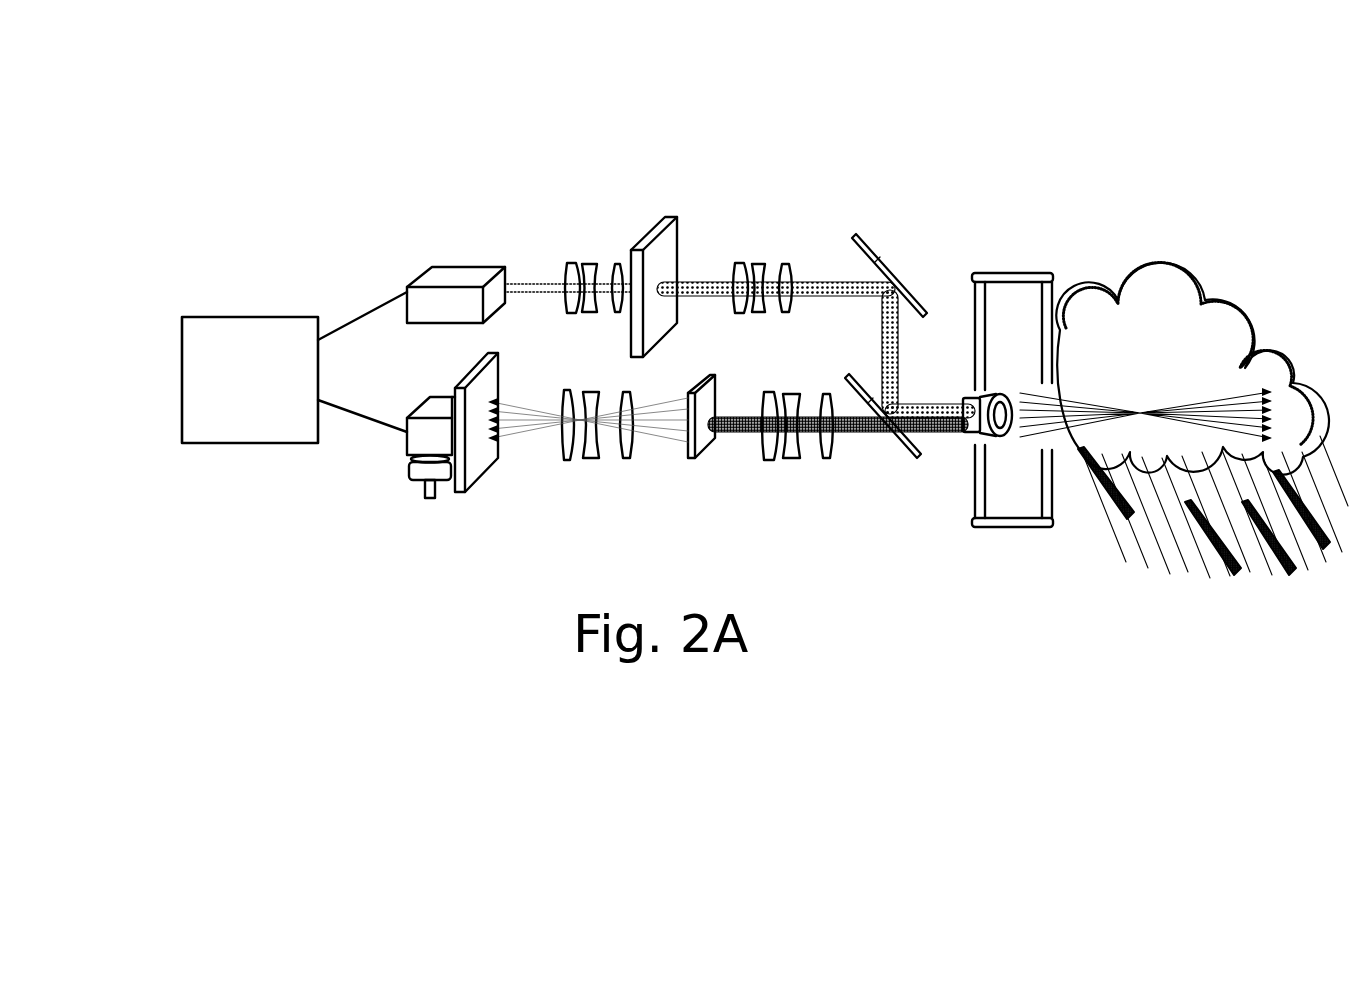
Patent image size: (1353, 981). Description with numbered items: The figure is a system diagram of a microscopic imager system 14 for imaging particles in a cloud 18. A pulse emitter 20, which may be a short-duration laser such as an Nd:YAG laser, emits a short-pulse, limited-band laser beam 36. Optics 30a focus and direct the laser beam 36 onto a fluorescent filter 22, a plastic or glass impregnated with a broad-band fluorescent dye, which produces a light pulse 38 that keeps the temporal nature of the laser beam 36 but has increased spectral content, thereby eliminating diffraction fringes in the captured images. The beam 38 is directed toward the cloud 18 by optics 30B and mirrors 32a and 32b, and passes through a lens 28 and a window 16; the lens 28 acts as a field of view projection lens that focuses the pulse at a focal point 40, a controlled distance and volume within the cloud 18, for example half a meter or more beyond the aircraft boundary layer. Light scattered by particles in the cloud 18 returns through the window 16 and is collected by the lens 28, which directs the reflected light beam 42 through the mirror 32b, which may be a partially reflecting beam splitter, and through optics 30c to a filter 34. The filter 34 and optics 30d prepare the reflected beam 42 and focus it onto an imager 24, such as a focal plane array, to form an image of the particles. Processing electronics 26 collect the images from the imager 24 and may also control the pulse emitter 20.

The microscopic imager system 14 is at (765, 348).
The window 16 is at (1029, 331).
The cloud 18 is at (1190, 369).
The pulse emitter 20 is at (445, 265).
The fluorescent filter 22 is at (657, 258).
The imager 24 is at (477, 447).
The processing electronics 26 is at (263, 389).
The lens 28 is at (1000, 436).
The optics 30a is at (595, 265).
The optics 30B is at (757, 265).
The optics 30c is at (788, 460).
The optics 30d is at (593, 458).
The mirror 32a is at (882, 270).
The mirror 32b is at (903, 437).
The filter 34 is at (703, 437).
The laser beam 36 is at (523, 282).
The light pulse 38 is at (817, 292).
The focal point 40 is at (1140, 413).
The reflected light beam 42 is at (853, 422).